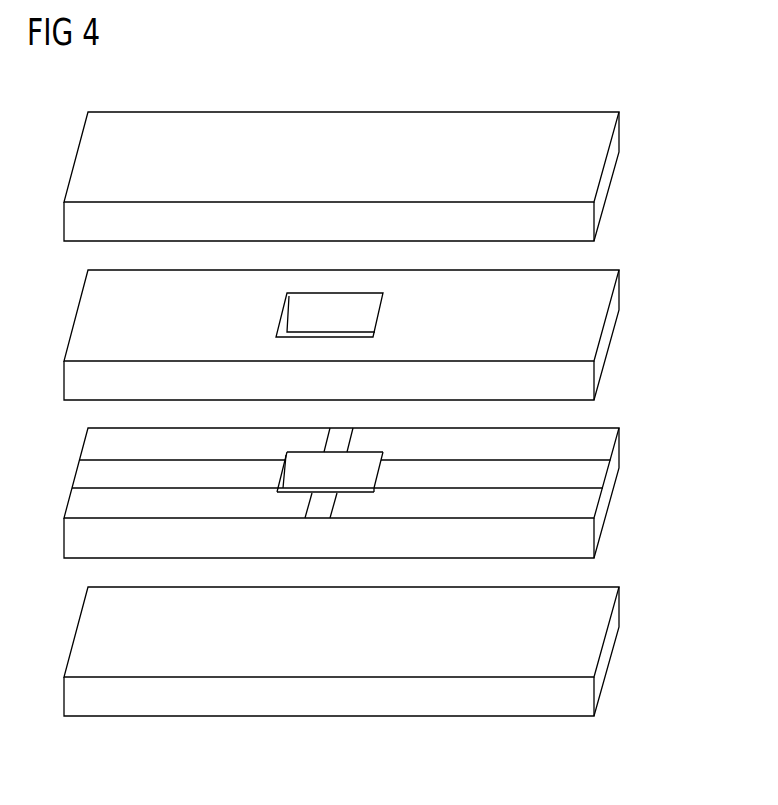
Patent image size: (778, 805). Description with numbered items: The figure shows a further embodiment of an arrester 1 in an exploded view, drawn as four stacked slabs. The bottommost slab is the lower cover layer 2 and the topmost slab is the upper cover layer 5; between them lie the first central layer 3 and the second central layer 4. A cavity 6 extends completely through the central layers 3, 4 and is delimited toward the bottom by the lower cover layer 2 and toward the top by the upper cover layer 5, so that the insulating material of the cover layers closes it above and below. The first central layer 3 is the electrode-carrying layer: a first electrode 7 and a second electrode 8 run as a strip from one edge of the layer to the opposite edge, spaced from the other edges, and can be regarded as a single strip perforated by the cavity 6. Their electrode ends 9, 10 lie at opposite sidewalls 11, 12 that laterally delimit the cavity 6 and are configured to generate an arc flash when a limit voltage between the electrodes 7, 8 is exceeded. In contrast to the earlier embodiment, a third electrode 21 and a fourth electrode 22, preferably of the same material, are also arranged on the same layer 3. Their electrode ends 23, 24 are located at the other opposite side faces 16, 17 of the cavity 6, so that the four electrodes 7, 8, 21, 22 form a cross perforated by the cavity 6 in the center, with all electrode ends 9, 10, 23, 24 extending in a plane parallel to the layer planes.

The arrester 1 is at (586, 70).
The lower cover layer 2 is at (590, 658).
The first central layer 3 is at (592, 500).
The second central layer 4 is at (590, 343).
The upper cover layer 5 is at (588, 183).
The cavity 6 is at (362, 315).
The first electrode 7 is at (87, 473).
The second electrode 8 is at (603, 468).
The electrode end 9 is at (285, 470).
The electrode end 10 is at (368, 472).
The sidewall 11 is at (280, 492).
The sidewall 12 is at (375, 488).
The side face 16 is at (365, 492).
The side face 17 is at (362, 447).
The third electrode 21 is at (318, 508).
The fourth electrode 22 is at (337, 437).
The electrode end 23 is at (305, 500).
The electrode end 24 is at (332, 455).